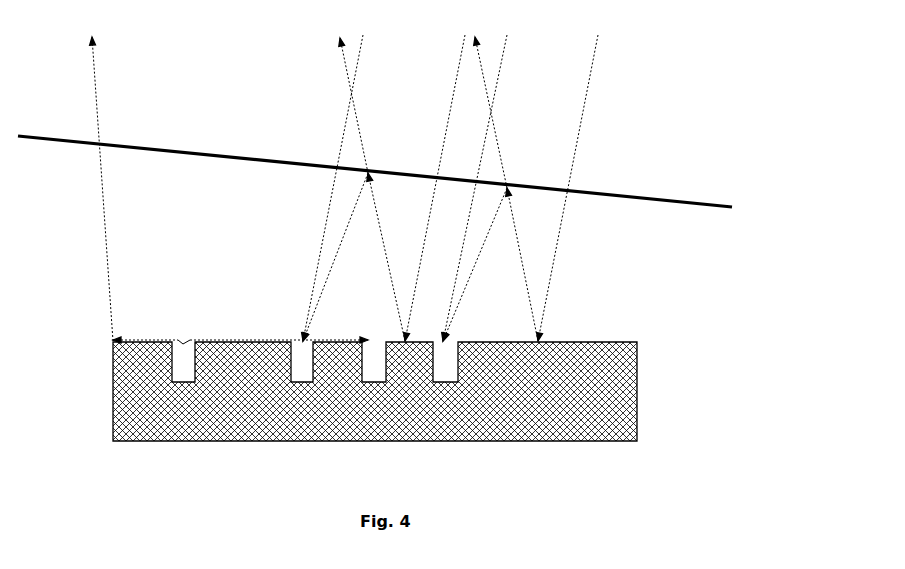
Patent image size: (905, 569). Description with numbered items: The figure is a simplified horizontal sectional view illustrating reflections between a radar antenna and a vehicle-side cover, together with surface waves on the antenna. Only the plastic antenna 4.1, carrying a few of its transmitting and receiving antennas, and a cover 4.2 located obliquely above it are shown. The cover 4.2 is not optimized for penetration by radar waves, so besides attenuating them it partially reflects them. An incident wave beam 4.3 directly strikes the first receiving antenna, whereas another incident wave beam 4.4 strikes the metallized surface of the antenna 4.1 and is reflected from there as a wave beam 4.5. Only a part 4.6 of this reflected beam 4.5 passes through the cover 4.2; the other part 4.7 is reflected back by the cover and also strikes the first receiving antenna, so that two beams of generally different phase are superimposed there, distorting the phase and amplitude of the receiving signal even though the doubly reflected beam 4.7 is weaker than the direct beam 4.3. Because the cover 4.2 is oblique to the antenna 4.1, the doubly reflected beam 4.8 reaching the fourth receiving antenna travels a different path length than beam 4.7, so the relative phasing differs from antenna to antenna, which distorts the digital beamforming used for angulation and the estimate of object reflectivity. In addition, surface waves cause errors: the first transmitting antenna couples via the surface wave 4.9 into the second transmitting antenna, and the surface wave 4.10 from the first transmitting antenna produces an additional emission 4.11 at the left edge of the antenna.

The plastic antenna 4.1 is at (612, 387).
The cover 4.2 is at (647, 201).
The incident wave beam 4.3 is at (398, 188).
The incident wave beam 4.4 is at (501, 188).
The reflected wave beam 4.5 is at (452, 257).
The transmitted part of reflected beam 4.6 is at (404, 109).
The doubly reflected beam 4.7 is at (335, 257).
The doubly reflected beam 4.8 is at (475, 264).
The surface wave 4.9 is at (279, 329).
The surface wave 4.10 is at (151, 330).
The edge emission 4.11 is at (74, 185).